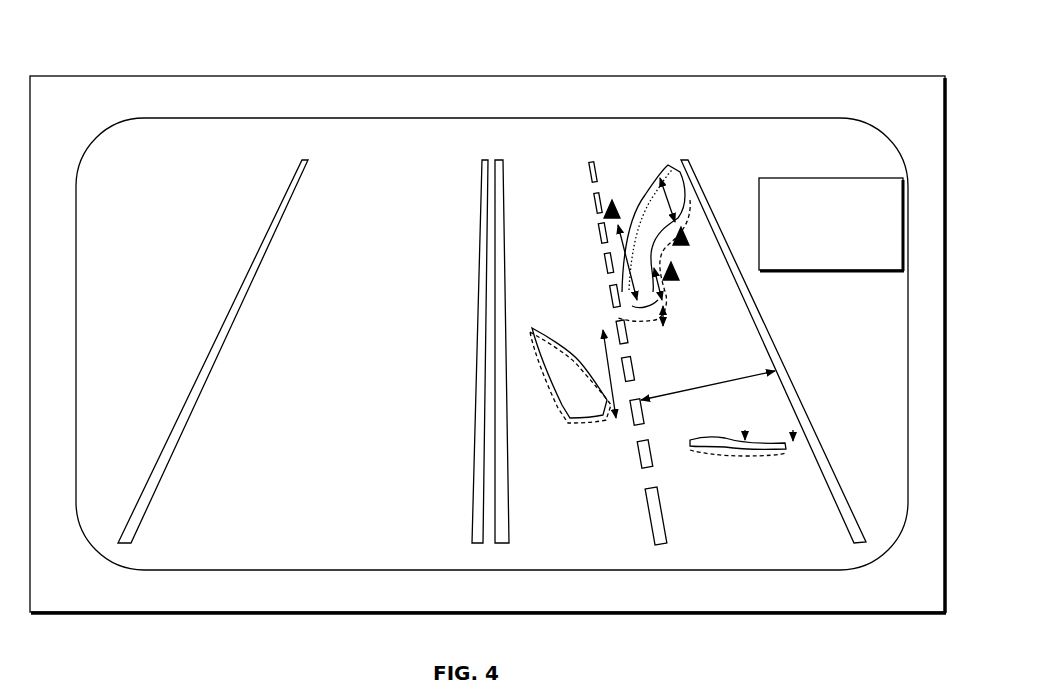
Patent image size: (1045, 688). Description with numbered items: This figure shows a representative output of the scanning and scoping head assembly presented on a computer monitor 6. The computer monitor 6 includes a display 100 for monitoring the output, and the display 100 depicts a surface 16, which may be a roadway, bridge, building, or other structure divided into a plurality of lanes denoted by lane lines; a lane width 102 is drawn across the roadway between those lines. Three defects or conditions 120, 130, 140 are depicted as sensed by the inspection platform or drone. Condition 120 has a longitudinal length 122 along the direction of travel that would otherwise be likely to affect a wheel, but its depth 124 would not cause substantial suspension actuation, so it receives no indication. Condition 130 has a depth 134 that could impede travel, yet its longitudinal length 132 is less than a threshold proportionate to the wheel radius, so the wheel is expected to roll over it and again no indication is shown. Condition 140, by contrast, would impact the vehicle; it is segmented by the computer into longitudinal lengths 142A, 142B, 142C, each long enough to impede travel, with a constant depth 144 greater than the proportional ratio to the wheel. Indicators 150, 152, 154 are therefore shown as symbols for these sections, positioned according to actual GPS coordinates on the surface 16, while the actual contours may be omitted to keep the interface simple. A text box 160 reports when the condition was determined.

The computer monitor 6 is at (576, 74).
The display 100 is at (412, 117).
The surface 16 is at (643, 172).
The condition 140 is at (632, 192).
The longitudinal length 142A is at (676, 190).
The longitudinal length 142B is at (665, 293).
The longitudinal length 142C is at (632, 303).
The depth 144 is at (666, 318).
The indicator 150 is at (690, 238).
The indicator 152 is at (680, 270).
The indicator 154 is at (606, 212).
The longitudinal length 122 is at (603, 356).
The condition 120 is at (606, 422).
The depth 124 is at (566, 396).
The lane width 102 is at (716, 384).
The condition 130 is at (731, 436).
The longitudinal length 132 is at (800, 442).
The depth 134 is at (744, 458).
The condition information box 160 is at (790, 178).